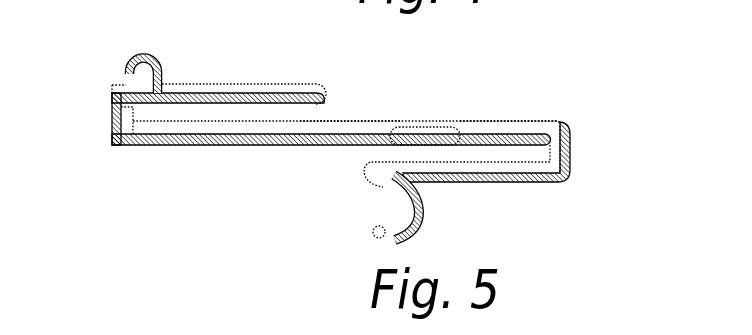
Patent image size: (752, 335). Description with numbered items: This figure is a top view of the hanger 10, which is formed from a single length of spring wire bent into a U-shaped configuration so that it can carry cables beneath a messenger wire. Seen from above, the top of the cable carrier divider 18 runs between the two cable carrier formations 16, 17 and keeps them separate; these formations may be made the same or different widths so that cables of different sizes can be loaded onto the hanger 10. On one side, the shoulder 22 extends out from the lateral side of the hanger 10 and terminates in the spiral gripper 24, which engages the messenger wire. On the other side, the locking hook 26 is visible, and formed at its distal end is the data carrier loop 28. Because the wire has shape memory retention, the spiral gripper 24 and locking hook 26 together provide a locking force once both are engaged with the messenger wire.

The hanger 10 is at (250, 153).
The cable carrier formation 16 is at (513, 121).
The cable carrier formation 17 is at (343, 121).
The cable carrier divider 18 is at (432, 127).
The shoulder 22 is at (509, 182).
The spiral gripper 24 is at (373, 228).
The locking hook 26 is at (195, 83).
The data carrier loop 28 is at (126, 52).